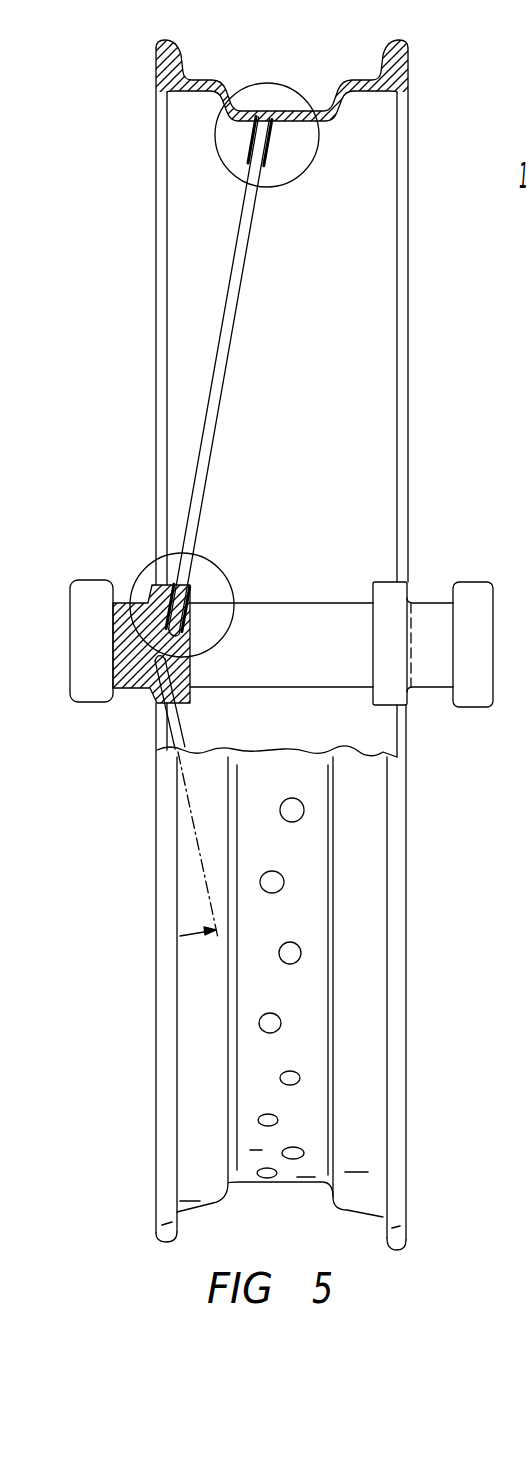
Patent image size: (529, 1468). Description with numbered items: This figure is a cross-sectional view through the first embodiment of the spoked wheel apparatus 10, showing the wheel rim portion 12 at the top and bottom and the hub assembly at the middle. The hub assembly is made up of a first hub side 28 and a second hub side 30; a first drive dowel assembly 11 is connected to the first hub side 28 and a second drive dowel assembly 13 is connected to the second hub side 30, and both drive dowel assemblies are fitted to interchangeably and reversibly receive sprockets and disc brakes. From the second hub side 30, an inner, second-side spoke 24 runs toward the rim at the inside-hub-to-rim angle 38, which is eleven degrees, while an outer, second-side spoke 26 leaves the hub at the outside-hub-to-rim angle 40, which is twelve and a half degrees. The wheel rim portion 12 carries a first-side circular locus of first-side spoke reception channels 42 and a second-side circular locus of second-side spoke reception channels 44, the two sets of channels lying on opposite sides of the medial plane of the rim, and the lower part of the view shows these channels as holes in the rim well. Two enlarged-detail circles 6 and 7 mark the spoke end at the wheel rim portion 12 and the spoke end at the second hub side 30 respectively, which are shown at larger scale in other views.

The spoked wheel apparatus 10 is at (417, 123).
The first drive dowel assembly 11 is at (470, 590).
The wheel rim portion 12 is at (344, 84).
The second drive dowel assembly 13 is at (90, 607).
The detail circle of spoke nipple at rim 6 is at (223, 167).
The detail circle of spoke end at hub 7 is at (150, 567).
The inner, second-side spokes 24 is at (232, 357).
The outer, second-side spokes 26 is at (170, 728).
The first hub side 28 is at (485, 715).
The second hub side 30 is at (92, 710).
The inside-hub-to-rim angle 38 is at (233, 278).
The outside-hub-to-rim angle 40 is at (190, 940).
The first-side spoke reception channels 42 is at (303, 815).
The second-side spoke reception channels 44 is at (262, 893).